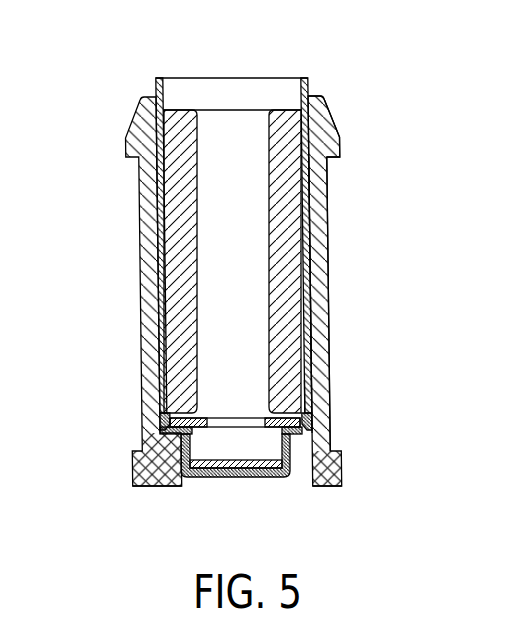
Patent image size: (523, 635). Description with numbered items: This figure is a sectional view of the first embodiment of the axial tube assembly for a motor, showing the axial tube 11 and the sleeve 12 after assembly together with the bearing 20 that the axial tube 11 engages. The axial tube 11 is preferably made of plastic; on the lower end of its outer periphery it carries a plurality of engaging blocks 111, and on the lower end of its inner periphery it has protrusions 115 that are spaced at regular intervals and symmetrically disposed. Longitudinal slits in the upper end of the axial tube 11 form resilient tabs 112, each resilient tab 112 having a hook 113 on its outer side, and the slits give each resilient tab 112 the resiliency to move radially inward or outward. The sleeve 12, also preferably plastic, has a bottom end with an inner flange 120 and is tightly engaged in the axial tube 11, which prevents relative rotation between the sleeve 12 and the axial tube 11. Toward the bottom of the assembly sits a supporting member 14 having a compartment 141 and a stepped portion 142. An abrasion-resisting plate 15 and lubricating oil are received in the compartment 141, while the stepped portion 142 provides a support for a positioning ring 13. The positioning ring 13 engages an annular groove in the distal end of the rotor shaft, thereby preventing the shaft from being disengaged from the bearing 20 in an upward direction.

The axial tube 11 is at (327, 302).
The engaging blocks 111 is at (335, 470).
The resilient tabs 112 is at (317, 190).
The hook 113 is at (332, 123).
The protrusions 115 is at (150, 488).
The sleeve 12 is at (307, 78).
The inner flange 120 is at (312, 391).
The positioning ring 13 is at (312, 417).
The supporting member 14 is at (150, 467).
The compartment 141 is at (255, 447).
The stepped portion 142 is at (150, 443).
The abrasion-resisting plate 15 is at (230, 477).
The bearing 20 is at (283, 120).